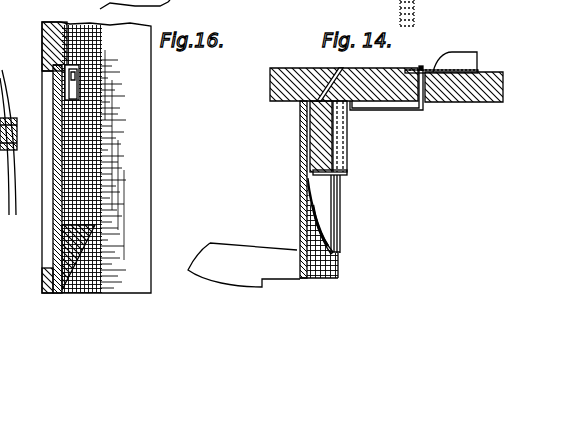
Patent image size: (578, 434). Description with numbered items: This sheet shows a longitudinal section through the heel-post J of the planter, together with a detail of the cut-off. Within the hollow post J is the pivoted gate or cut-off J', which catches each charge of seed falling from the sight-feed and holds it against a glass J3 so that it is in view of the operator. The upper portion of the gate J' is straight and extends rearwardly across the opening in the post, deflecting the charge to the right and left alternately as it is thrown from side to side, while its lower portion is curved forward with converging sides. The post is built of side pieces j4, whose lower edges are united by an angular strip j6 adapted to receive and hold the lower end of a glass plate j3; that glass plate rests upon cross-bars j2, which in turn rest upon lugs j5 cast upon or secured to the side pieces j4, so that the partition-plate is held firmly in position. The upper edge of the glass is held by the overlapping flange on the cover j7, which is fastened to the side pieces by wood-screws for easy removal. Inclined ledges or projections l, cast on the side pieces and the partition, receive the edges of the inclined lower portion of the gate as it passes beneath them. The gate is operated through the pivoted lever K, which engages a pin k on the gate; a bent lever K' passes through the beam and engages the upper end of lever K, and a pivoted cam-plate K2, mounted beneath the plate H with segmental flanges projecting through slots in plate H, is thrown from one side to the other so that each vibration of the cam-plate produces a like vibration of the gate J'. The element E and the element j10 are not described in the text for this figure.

In FIG. 16, the side piece j4 is at (106, 159).
In FIG. 14, the side piece j4 is at (330, 258).
In FIG. 16, the cover j7 is at (45, 45).
In FIG. 16, the glass plate j3 is at (66, 306).
In FIG. 16, the cross-bar j2 is at (80, 85).
In FIG. 16, the inclined ledge l is at (82, 80).
In FIG. 16, the lug j5 is at (100, 240).
In FIG. 16, the angular strip j6 is at (44, 288).
In FIG. 16, the adjacent member j10 is at (11, 110).
In FIG. 14, the bar E is at (503, 90).
In FIG. 14, the bent lever K' is at (393, 104).
In FIG. 14, the pivoted lever K is at (441, 69).
In FIG. 14, the cam-plate K2 is at (462, 58).
In FIG. 14, the plate H is at (412, 10).
In FIG. 14, the post J is at (308, 189).
In FIG. 14, the pin k is at (347, 172).
In FIG. 14, the gate J' is at (300, 216).
In FIG. 14, the glass J3 is at (338, 205).